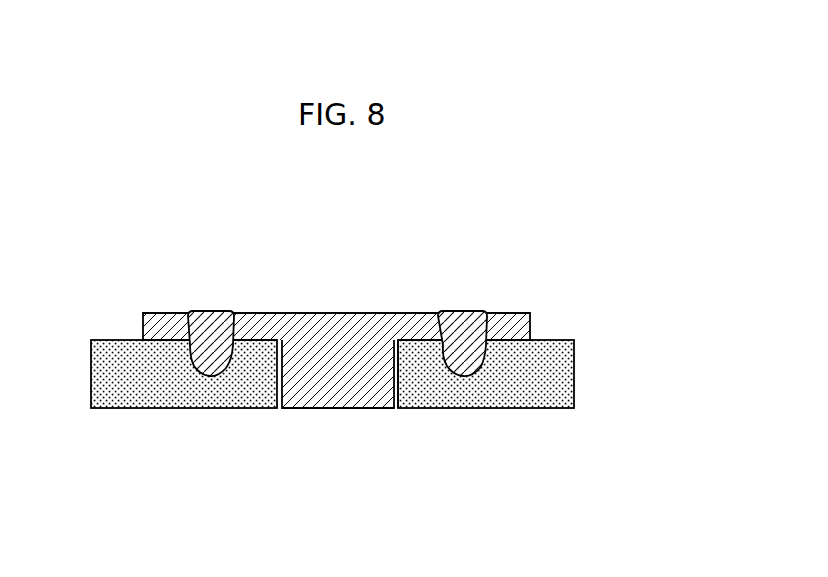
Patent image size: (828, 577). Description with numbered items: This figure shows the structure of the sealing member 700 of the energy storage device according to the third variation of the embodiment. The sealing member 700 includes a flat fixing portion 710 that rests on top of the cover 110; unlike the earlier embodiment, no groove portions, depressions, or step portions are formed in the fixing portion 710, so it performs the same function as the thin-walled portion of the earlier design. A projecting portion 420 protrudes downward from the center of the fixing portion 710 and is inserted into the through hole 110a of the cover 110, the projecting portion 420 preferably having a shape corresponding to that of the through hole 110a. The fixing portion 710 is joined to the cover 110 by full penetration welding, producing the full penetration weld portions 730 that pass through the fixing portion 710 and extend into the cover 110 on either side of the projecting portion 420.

The sealing member 700 is at (572, 272).
The fixing portion 710 is at (530, 322).
The full penetration weld portion 730 is at (208, 377).
The projecting portion 420 is at (308, 407).
The cover 110 is at (546, 397).
The through hole 110a is at (396, 401).